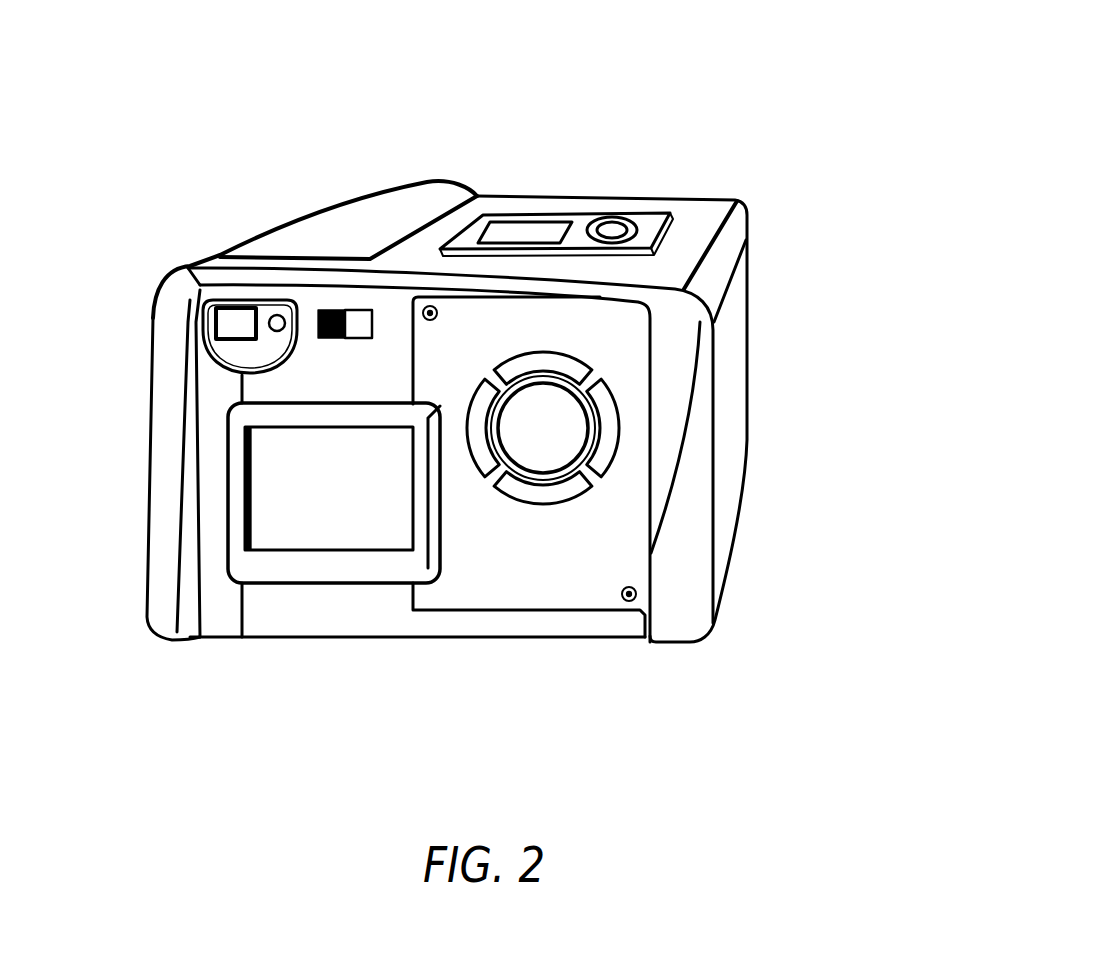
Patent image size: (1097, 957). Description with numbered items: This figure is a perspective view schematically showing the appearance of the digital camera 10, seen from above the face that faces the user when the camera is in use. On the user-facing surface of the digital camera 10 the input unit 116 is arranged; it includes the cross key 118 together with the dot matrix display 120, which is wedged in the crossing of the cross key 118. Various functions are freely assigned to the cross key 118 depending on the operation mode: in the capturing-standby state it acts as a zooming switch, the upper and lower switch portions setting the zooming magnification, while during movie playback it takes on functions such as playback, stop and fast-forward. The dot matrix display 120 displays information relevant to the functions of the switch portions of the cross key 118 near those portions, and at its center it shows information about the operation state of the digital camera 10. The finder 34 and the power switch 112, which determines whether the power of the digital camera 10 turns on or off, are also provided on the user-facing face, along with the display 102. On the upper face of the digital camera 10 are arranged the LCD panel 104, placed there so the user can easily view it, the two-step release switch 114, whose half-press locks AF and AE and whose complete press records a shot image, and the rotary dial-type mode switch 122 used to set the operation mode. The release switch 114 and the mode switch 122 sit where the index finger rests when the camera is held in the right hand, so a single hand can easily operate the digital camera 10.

The digital camera 10 is at (908, 62).
The finder 34 is at (222, 318).
The LCD display 102 is at (318, 526).
The LCD panel 104 is at (515, 225).
The power switch 112 is at (332, 307).
The release switch 114 is at (613, 228).
The input unit 116 is at (885, 343).
The cross key 118 is at (573, 370).
The dot matrix display 120 is at (565, 440).
The mode switch 122 is at (668, 212).